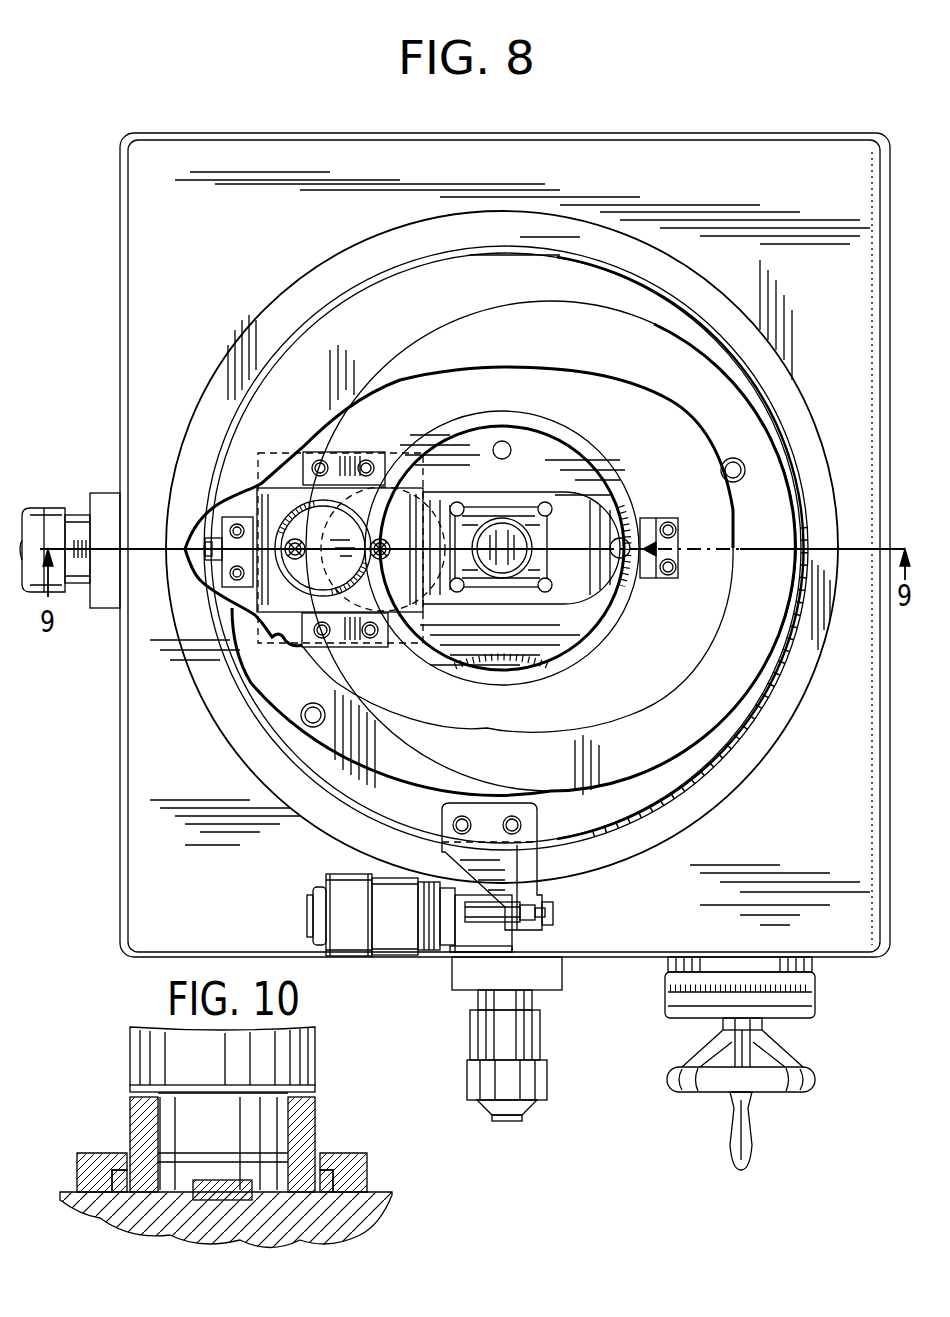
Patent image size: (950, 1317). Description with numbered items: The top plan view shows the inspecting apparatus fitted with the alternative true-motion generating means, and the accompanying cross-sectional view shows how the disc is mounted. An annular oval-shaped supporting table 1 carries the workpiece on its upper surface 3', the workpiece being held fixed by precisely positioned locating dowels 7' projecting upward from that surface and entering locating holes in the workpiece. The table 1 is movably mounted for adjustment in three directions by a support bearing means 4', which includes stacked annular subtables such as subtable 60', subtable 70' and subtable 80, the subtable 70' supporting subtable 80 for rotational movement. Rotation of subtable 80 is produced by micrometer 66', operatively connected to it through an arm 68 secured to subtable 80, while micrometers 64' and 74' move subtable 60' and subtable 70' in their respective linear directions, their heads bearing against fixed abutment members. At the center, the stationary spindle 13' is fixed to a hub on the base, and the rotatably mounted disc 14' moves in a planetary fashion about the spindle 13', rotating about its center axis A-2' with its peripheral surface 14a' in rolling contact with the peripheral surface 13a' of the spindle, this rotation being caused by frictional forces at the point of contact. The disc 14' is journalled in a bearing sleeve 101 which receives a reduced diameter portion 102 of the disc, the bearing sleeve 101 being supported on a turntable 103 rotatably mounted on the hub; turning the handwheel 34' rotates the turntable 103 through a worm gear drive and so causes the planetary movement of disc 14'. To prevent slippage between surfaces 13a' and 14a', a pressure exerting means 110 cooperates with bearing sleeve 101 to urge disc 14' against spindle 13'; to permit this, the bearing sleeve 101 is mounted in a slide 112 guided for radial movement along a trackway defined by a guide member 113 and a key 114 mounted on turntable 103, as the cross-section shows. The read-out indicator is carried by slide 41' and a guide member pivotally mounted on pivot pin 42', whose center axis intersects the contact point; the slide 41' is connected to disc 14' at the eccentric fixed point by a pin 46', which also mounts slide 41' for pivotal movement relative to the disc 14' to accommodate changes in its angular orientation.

In FIG. 8, the subtable 60' is at (496, 545).
In FIG. 8, the support bearing means 4' is at (502, 547).
In FIG. 8, the upper surface 3' is at (506, 548).
In FIG. 8, the supporting table 1 is at (540, 320).
In FIG. 8, the subtable 80 is at (665, 792).
In FIG. 8, the peripheral surface of disc 14a' is at (434, 549).
In FIG. 8, the micrometer 64' is at (55, 525).
In FIG. 8, the spindle 13' is at (502, 554).
In FIG. 8, the peripheral surface of spindle 13a' is at (524, 548).
In FIG. 8, the slide 41' is at (523, 562).
In FIG. 8, the locating dowels 7' is at (522, 592).
In FIG. 8, the pivot pin 42' is at (340, 550).
In FIG. 8, the center axis of disc A-2' is at (323, 548).
In FIG. 8, the pin 46' is at (340, 532).
In FIG. 8, the pressure exerting means 110 is at (200, 567).
In FIG. 8, the guide member 113 is at (346, 462).
In FIG. 10, the guide member 113 is at (82, 1175).
In FIG. 8, the arm 68 is at (505, 860).
In FIG. 8, the micrometer 66' is at (411, 903).
In FIG. 8, the micrometer 74' is at (524, 1039).
In FIG. 8, the subtable 70' is at (761, 980).
In FIG. 8, the handwheel 34' is at (741, 1094).
In FIG. 10, the disc 14' is at (241, 1108).
In FIG. 10, the bearing sleeve 101 is at (138, 1112).
In FIG. 10, the reduced diameter portion 102 is at (262, 1125).
In FIG. 10, the slide 112 is at (122, 1175).
In FIG. 10, the turntable 103 is at (325, 1205).
In FIG. 10, the key 114 is at (225, 1200).